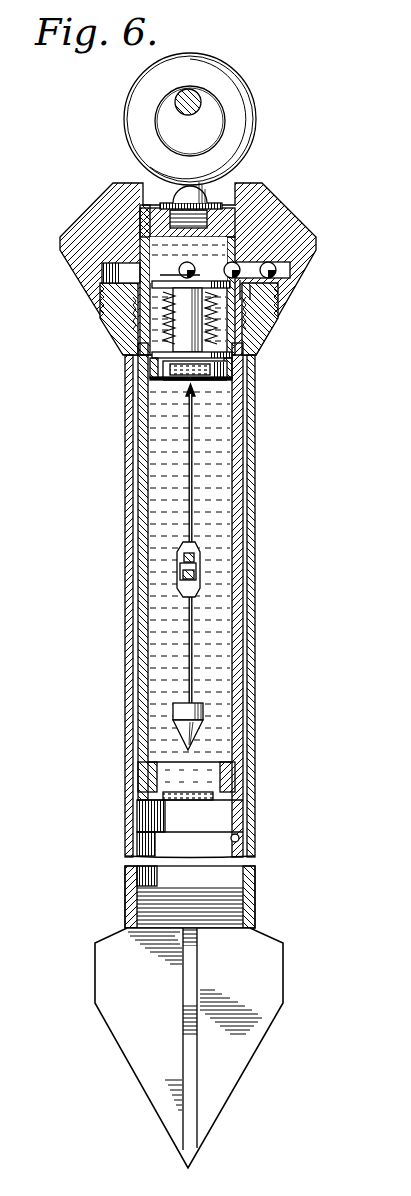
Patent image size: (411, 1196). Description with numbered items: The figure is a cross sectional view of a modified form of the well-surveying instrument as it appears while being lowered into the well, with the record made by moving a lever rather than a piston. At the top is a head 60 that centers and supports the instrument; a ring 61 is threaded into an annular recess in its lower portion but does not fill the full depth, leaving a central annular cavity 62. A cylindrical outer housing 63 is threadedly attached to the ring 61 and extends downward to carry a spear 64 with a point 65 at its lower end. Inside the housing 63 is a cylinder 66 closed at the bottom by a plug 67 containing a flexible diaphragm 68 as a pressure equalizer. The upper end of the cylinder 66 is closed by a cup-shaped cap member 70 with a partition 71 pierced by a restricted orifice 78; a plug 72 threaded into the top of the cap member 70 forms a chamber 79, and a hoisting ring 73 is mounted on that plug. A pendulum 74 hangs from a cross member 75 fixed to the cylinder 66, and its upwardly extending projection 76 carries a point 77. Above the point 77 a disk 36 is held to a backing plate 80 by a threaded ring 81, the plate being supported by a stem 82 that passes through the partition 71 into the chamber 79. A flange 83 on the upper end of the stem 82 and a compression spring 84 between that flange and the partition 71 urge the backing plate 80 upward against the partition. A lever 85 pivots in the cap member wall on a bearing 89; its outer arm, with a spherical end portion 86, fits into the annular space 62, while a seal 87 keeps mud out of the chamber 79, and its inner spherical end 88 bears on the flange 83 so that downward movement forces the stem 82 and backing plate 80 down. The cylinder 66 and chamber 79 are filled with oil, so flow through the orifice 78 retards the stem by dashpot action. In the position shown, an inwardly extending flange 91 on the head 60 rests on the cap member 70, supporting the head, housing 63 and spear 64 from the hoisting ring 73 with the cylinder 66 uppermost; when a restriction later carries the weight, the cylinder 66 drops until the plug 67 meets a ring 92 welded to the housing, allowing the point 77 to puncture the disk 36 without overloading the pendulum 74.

The disk 36 is at (175, 376).
The head 60 is at (290, 213).
The ring 61 is at (260, 347).
The central annular cavity 62 is at (101, 272).
The outer housing 63 is at (248, 493).
The spear 64 is at (238, 890).
The point 65 is at (258, 940).
The cylinder 66 is at (236, 676).
The plug 67 is at (225, 800).
The flexible diaphragm 68 is at (180, 796).
The cap member 70 is at (142, 312).
The partition 71 is at (150, 358).
The plug 72 is at (220, 212).
The hoisting ring 73 is at (240, 108).
The pendulum 74 is at (204, 609).
The cross member 75 is at (178, 572).
The upwardly extending projection 76 is at (187, 468).
The point 77 is at (192, 392).
The orifice 78 is at (150, 351).
The chamber 79 is at (245, 297).
The backing plate 80 is at (215, 370).
The threaded ring 81 is at (150, 381).
The stem 82 is at (183, 322).
The flange 83 is at (165, 283).
The compression spring 84 is at (225, 325).
The lever 85 is at (250, 273).
The spherical end portion 86 is at (270, 276).
The seal 87 is at (262, 240).
The spherical end 88 is at (162, 276).
The bearing 89 is at (265, 210).
The inwardly extending flange 91 is at (152, 190).
The inwardly extending flange or ring 92 is at (245, 846).